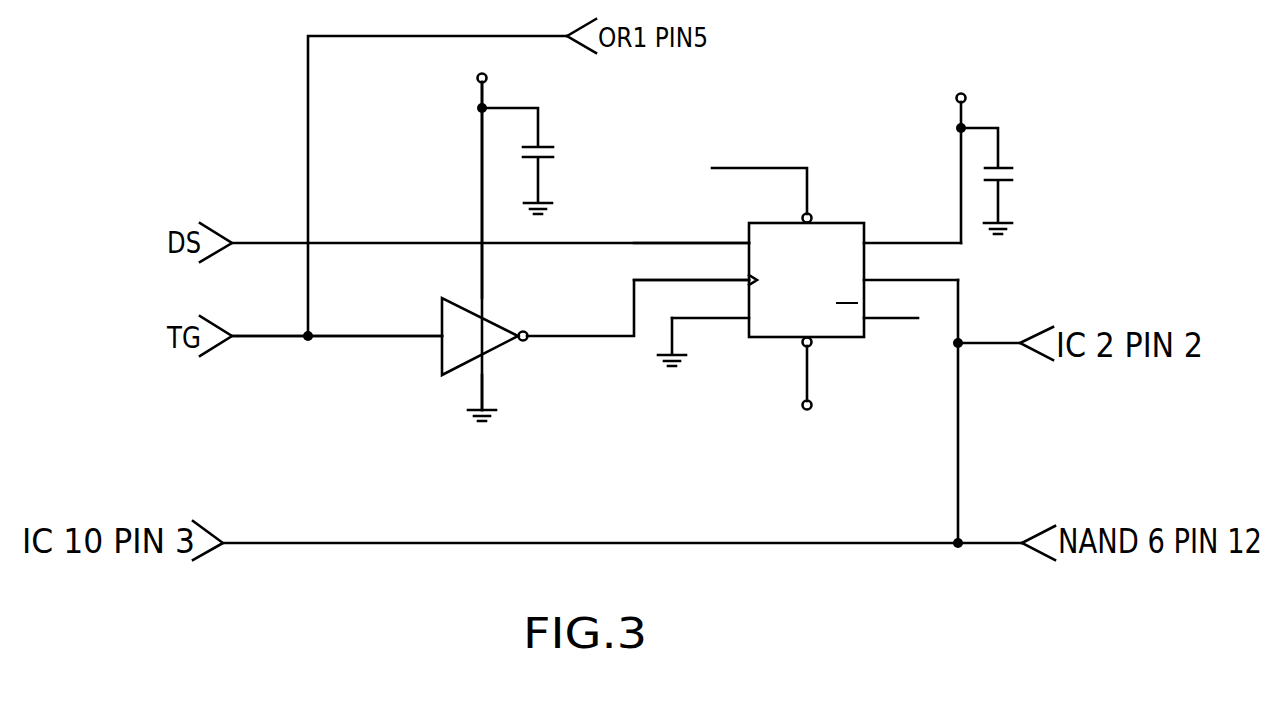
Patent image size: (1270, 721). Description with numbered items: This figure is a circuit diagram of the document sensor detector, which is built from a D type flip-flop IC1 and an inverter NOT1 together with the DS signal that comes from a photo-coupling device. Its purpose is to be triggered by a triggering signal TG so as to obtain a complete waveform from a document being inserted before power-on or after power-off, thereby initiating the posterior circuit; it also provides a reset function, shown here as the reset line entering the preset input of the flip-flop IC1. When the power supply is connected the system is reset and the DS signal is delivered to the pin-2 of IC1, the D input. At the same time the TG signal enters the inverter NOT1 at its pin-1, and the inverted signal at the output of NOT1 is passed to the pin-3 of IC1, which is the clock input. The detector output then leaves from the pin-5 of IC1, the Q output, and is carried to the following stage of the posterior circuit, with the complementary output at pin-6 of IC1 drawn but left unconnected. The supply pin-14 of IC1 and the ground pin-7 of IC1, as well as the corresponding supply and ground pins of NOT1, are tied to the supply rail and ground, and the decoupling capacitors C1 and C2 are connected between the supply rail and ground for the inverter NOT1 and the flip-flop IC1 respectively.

The inverter NOT1 is at (485, 232).
The D type flip-flop IC1 is at (761, 291).
The capacitor C1 is at (532, 163).
The capacitor C2 is at (997, 154).
The pin-1 of NOT1 1 is at (337, 320).
The pin-2 of IC1 2 is at (638, 275).
The pin-3 of IC1 3 is at (691, 266).
The pin-5 of IC1 5 is at (911, 266).
The IC1 Q-bar output pin 6 is at (891, 304).
The ground pin 7 is at (615, 349).
The Vcc pin 14 is at (721, 200).